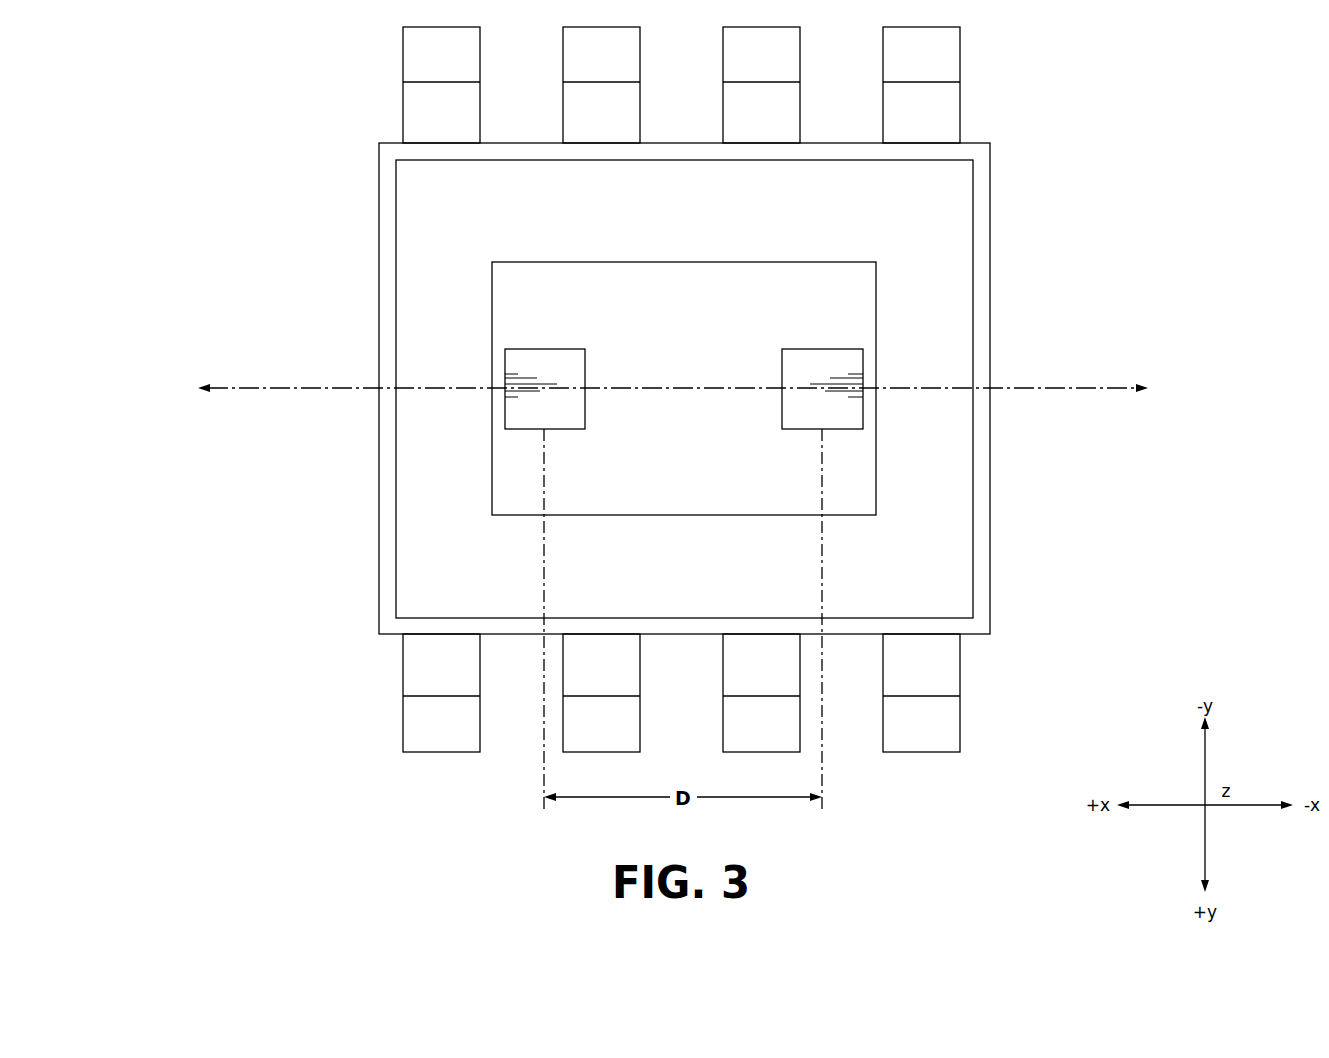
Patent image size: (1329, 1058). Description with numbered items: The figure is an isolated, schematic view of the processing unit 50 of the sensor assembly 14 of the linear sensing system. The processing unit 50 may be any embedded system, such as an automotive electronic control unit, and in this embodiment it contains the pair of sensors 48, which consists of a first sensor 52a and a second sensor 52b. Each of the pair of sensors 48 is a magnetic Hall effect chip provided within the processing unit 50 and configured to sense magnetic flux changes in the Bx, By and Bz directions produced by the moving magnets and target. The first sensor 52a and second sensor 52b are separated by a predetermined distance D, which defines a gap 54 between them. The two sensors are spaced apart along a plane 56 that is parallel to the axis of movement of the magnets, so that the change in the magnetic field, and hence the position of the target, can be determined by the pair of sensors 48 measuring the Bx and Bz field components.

The sensor assembly 14 is at (294, 139).
The pair of sensors 48 is at (425, 308).
The processing unit 50 is at (947, 257).
The first sensor 52a is at (556, 362).
The second sensor 52b is at (810, 362).
The gap 54 is at (673, 420).
The plane 56 is at (285, 388).